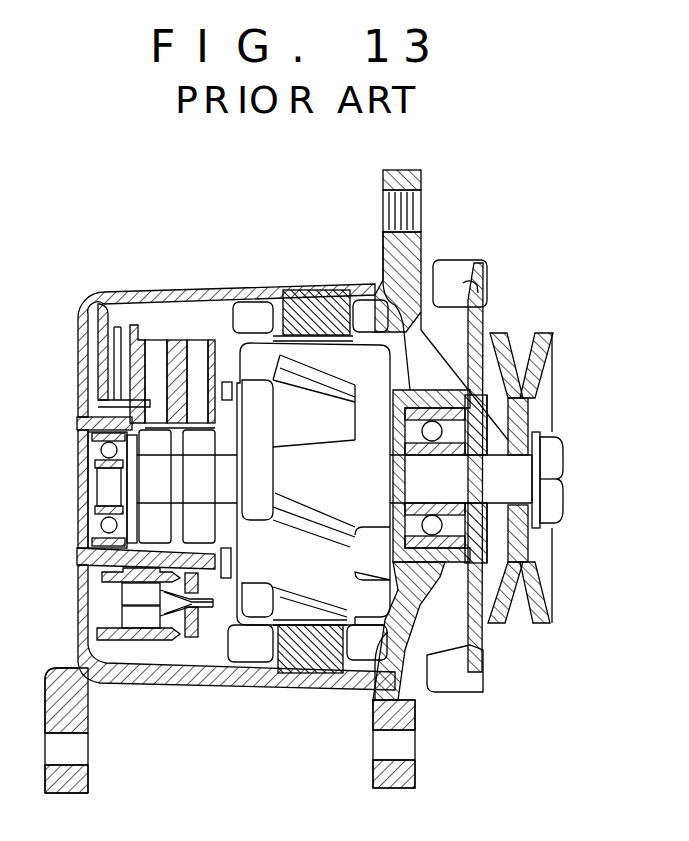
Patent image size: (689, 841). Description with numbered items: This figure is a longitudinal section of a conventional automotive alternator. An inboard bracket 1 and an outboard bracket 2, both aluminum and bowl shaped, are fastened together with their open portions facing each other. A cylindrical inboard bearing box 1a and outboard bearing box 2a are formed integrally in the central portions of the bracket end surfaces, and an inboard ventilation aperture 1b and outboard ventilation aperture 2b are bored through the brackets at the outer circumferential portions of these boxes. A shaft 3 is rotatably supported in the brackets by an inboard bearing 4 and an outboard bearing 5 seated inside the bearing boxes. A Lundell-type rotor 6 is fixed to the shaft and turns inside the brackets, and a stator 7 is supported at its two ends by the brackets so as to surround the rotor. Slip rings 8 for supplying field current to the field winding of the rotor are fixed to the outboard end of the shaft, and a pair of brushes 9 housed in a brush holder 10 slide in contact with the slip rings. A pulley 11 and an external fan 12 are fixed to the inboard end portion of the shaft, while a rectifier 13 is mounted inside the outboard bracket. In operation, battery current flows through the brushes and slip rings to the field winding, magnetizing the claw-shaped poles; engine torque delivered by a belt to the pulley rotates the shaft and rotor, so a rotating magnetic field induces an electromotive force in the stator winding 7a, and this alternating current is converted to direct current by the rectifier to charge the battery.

The inboard bracket 1 is at (425, 237).
The inboard bearing box 1a is at (457, 393).
The inboard ventilation aperture 1b is at (420, 354).
The outboard bracket 2 is at (92, 296).
The outboard bearing box 2a is at (78, 550).
The outboard ventilation aperture 2b is at (80, 610).
The shaft 3 is at (105, 480).
The inboard bearing 4 is at (437, 390).
The outboard bearing 5 is at (80, 420).
The Lundell-type rotor 6 is at (262, 355).
The stator 7 is at (315, 288).
The stator winding 7a is at (365, 320).
The slip rings 8 is at (97, 566).
The brushes 9 is at (157, 355).
The brush holder 10 is at (183, 345).
The pulley 11 is at (492, 332).
The external fan 12 is at (486, 668).
The rectifier 13 is at (158, 642).